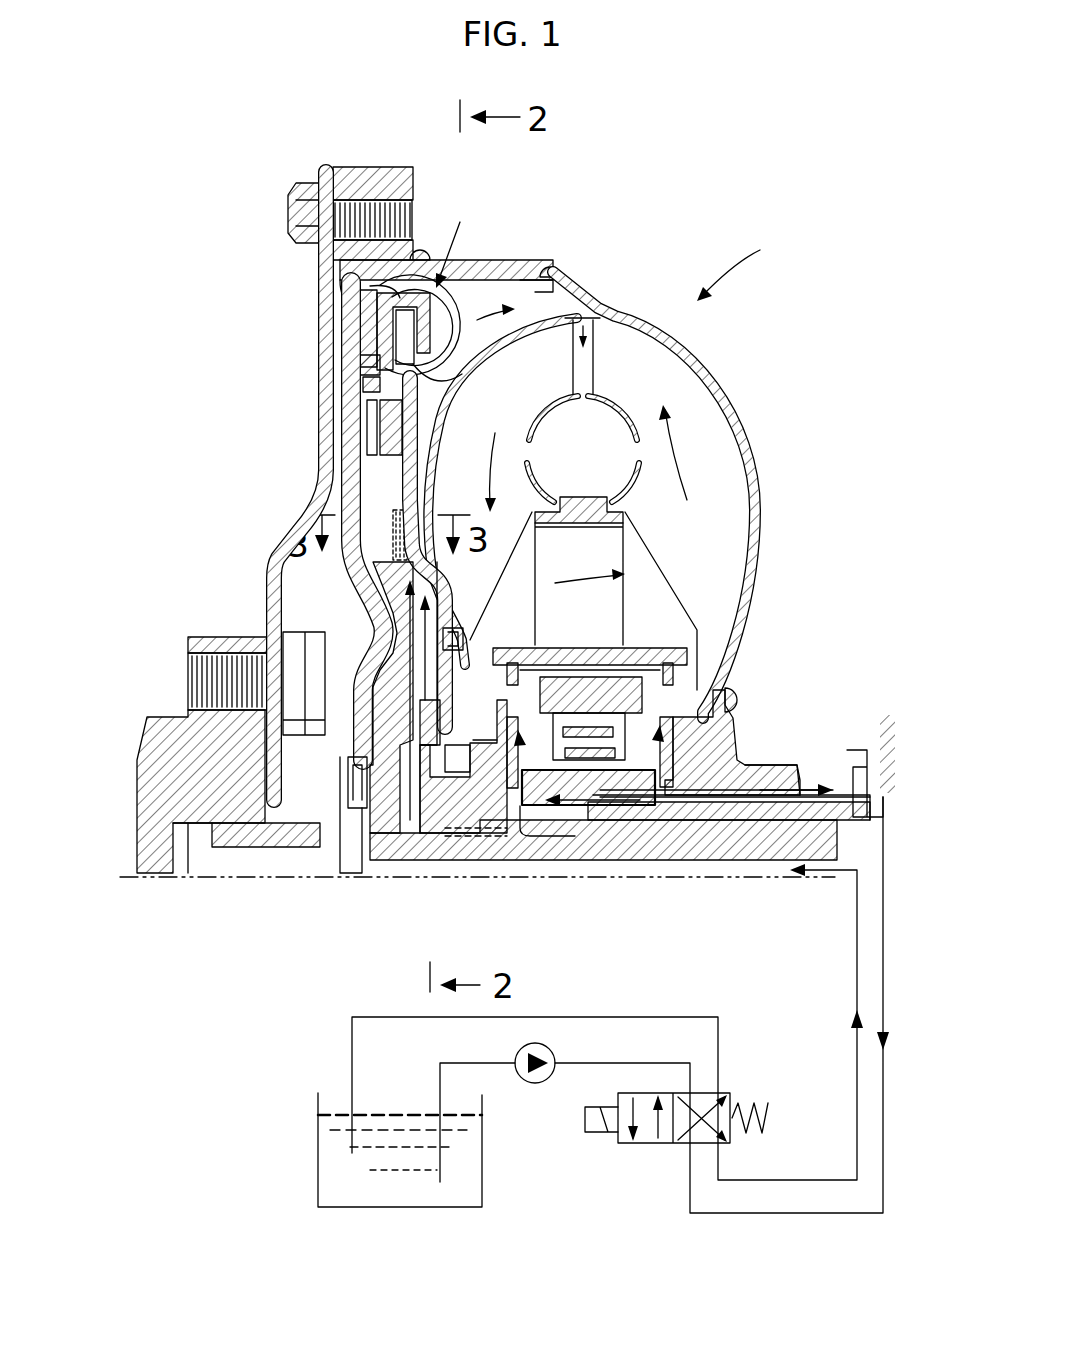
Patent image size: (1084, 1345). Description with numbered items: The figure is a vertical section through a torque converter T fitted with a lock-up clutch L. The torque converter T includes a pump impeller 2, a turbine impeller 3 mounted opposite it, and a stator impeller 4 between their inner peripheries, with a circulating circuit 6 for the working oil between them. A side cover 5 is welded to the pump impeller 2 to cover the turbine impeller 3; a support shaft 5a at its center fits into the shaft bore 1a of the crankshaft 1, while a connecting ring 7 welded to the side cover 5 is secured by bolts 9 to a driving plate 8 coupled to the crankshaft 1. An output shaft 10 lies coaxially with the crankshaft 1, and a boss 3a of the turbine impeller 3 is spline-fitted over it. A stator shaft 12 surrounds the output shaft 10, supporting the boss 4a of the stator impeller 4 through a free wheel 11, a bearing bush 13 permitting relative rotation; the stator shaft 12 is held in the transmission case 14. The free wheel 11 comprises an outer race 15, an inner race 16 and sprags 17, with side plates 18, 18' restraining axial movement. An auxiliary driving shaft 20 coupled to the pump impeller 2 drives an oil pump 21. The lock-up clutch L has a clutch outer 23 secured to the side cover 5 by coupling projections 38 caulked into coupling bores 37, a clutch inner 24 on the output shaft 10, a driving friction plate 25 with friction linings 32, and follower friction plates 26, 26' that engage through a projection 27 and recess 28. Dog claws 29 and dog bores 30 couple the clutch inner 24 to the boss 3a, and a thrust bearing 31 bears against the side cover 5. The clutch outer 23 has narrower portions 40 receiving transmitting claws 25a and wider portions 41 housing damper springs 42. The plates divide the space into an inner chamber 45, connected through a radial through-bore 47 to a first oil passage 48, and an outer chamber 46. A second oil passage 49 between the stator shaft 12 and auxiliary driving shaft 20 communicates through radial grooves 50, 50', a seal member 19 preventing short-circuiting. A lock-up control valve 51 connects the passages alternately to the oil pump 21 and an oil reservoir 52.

The crankshaft 1 is at (156, 730).
The shaft bore 1a is at (198, 833).
The pump impeller 2 is at (706, 376).
The turbine impeller 3 is at (458, 394).
The boss 3a is at (460, 823).
The stator impeller 4 is at (581, 497).
The boss 4a is at (593, 650).
The side cover 5 is at (470, 268).
The support shaft 5a is at (261, 850).
The circulating circuit 6 is at (702, 442).
The connecting ring 7 is at (342, 183).
The driving plate 8 is at (320, 403).
The bolts 9 is at (292, 217).
The output shaft 10 is at (728, 862).
The free wheel 11 is at (626, 700).
The stator shaft 12 is at (785, 862).
The bearing bush 13 is at (660, 822).
The transmission case 14 is at (878, 715).
The outer race 15 is at (566, 690).
The inner race 16 is at (623, 780).
The sprags 17 is at (696, 696).
The side plate 18 is at (511, 690).
The side plate 18' is at (683, 667).
The seal member 19 is at (557, 838).
The auxiliary driving shaft 20 is at (778, 773).
The oil pump 21 is at (536, 1083).
The clutch outer 23 is at (360, 327).
The clutch inner 24 is at (378, 782).
The driving friction plate 25 is at (397, 422).
The transmitting claws 25a is at (398, 336).
The first follower friction plate 26 is at (321, 511).
The second follower friction plate 26' is at (445, 552).
The projection 27 is at (343, 492).
The recess 28 is at (378, 560).
The dog claws 29 is at (484, 835).
The dog bores 30 is at (503, 833).
The thrust bearing 31 is at (350, 810).
The friction linings 32 is at (390, 432).
The coupling bores 37 is at (367, 380).
The coupling projections 38 is at (368, 367).
The narrower portions 40 is at (403, 293).
The wider portions 41 is at (378, 315).
The damper springs 42 is at (462, 352).
The inner chamber 45 is at (400, 705).
The outer chamber 46 is at (470, 300).
The radial through-bore 47 is at (385, 835).
The first oil passage 48 is at (760, 892).
The second oil passage 49 is at (748, 792).
The radial grooves 50 is at (465, 604).
The radial grooves 50' is at (746, 697).
The lock-up control valve 51 is at (647, 1145).
The oil reservoir 52 is at (482, 1160).
The lock-up clutch L is at (452, 240).
The torque converter T is at (741, 263).